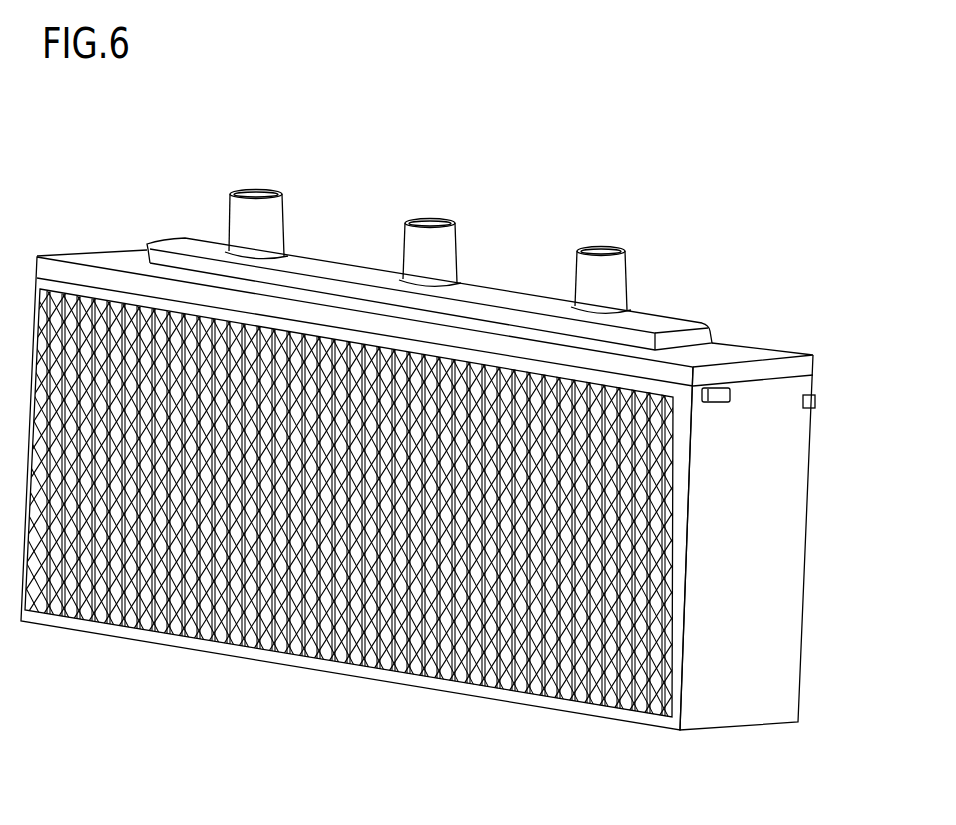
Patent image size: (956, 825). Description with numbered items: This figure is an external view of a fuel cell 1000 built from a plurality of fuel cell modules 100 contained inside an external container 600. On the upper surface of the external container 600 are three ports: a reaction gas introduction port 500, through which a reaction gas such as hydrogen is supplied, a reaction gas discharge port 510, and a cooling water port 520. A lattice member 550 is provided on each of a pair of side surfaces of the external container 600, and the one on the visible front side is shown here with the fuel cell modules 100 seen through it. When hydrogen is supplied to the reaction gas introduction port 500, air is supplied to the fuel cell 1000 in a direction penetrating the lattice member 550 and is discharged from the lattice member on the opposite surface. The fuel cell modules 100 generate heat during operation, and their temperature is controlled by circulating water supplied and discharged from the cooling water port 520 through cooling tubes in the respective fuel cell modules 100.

The fuel cell 1000 is at (438, 123).
The fuel cell module 100 is at (200, 638).
The reaction gas introduction port 500 is at (263, 193).
The reaction gas discharge port 510 is at (432, 222).
The cooling water port 520 is at (600, 250).
The lattice member 550 is at (428, 680).
The external container 600 is at (773, 612).